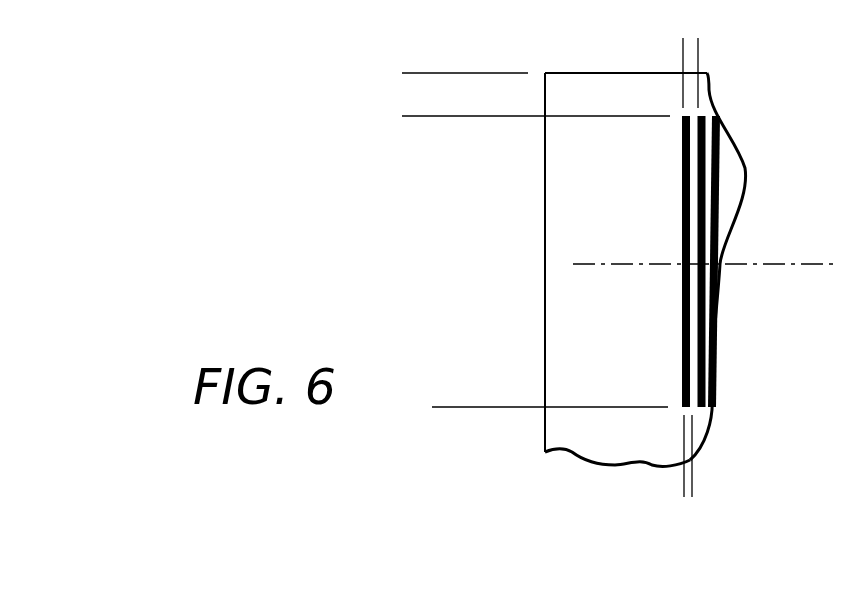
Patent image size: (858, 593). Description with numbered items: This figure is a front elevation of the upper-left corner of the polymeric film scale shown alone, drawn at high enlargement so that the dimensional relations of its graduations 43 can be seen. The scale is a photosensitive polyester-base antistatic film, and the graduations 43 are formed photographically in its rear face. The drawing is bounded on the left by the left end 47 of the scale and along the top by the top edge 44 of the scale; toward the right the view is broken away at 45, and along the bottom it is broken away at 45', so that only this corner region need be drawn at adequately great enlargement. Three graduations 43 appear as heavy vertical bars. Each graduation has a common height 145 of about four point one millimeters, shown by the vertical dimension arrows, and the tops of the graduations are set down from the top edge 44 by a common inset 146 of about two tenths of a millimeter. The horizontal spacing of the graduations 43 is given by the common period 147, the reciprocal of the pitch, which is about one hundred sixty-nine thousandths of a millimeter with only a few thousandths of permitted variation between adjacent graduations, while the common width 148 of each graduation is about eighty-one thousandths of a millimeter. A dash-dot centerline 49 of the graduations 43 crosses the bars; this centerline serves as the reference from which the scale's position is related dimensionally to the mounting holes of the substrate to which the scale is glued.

The graduations 43 is at (682, 207).
The top edge of scale 44 is at (600, 73).
The broken-away region 45 is at (753, 266).
The broken-away bottom 45' is at (582, 476).
The left end of scale 47 is at (545, 247).
The centerline of graduations 49 is at (785, 265).
The common height of graduations 145 is at (452, 116).
The common inset of tops of graduations 146 is at (427, 165).
The common period of graduations 147 is at (645, 52).
The common width of graduations 148 is at (648, 480).